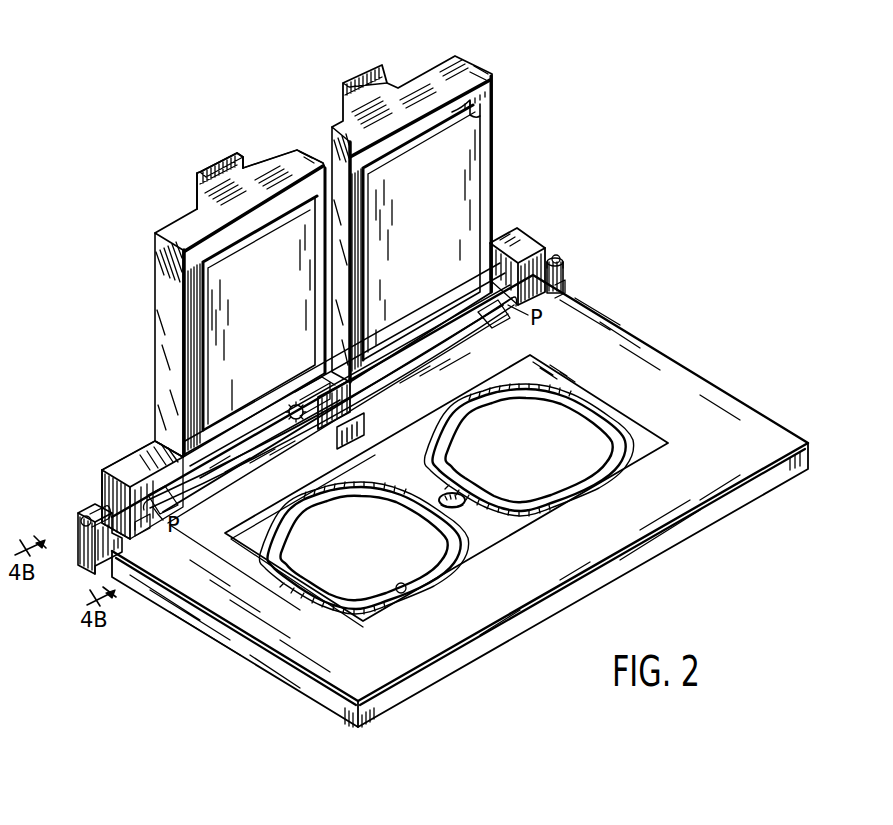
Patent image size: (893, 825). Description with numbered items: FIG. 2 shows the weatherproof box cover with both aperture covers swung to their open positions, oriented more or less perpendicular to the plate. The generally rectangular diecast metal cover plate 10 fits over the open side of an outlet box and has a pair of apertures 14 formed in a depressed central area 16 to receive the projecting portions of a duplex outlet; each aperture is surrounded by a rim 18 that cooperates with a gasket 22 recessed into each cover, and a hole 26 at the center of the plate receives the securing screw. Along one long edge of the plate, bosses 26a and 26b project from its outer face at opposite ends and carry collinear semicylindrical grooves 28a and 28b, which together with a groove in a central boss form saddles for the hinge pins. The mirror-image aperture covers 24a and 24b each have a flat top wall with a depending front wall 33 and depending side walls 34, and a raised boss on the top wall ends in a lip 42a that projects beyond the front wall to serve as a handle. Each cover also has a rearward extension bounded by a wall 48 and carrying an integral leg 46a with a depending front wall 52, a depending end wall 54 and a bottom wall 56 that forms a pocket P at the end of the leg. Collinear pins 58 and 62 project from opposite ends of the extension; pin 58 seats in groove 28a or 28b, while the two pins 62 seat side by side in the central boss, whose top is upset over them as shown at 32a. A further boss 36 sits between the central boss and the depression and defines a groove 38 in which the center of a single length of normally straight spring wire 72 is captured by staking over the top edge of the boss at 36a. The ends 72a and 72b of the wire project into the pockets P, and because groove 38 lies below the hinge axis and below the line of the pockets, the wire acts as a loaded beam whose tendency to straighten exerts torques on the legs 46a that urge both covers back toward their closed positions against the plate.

The cover plate 10 is at (740, 393).
The apertures 14 is at (567, 400).
The depressed central area 16 is at (650, 447).
The rims 18 is at (597, 413).
The gaskets 22 is at (222, 258).
The aperture cover 24a is at (283, 131).
The aperture cover 24b is at (503, 76).
The hole 26 is at (458, 506).
The boss 26a is at (100, 550).
The boss 26b is at (563, 278).
The groove 28a is at (103, 510).
The groove 28b is at (548, 253).
The upset portion of boss 32a is at (308, 390).
The front wall 33 is at (266, 177).
The side walls 34 is at (192, 333).
The boss 36 is at (277, 398).
The staked edge of boss 36a is at (367, 437).
The groove 38 is at (347, 437).
The lip 42a is at (208, 168).
The leg 46a is at (145, 443).
The wall 48 is at (267, 440).
The front wall 52 is at (118, 463).
The end wall 54 is at (100, 475).
The bottom wall 56 is at (142, 523).
The pin 58 is at (78, 520).
The pin 62 is at (322, 382).
The spring wire 72 is at (470, 333).
The spring wire end 72a is at (170, 500).
The spring wire end 72b is at (493, 313).